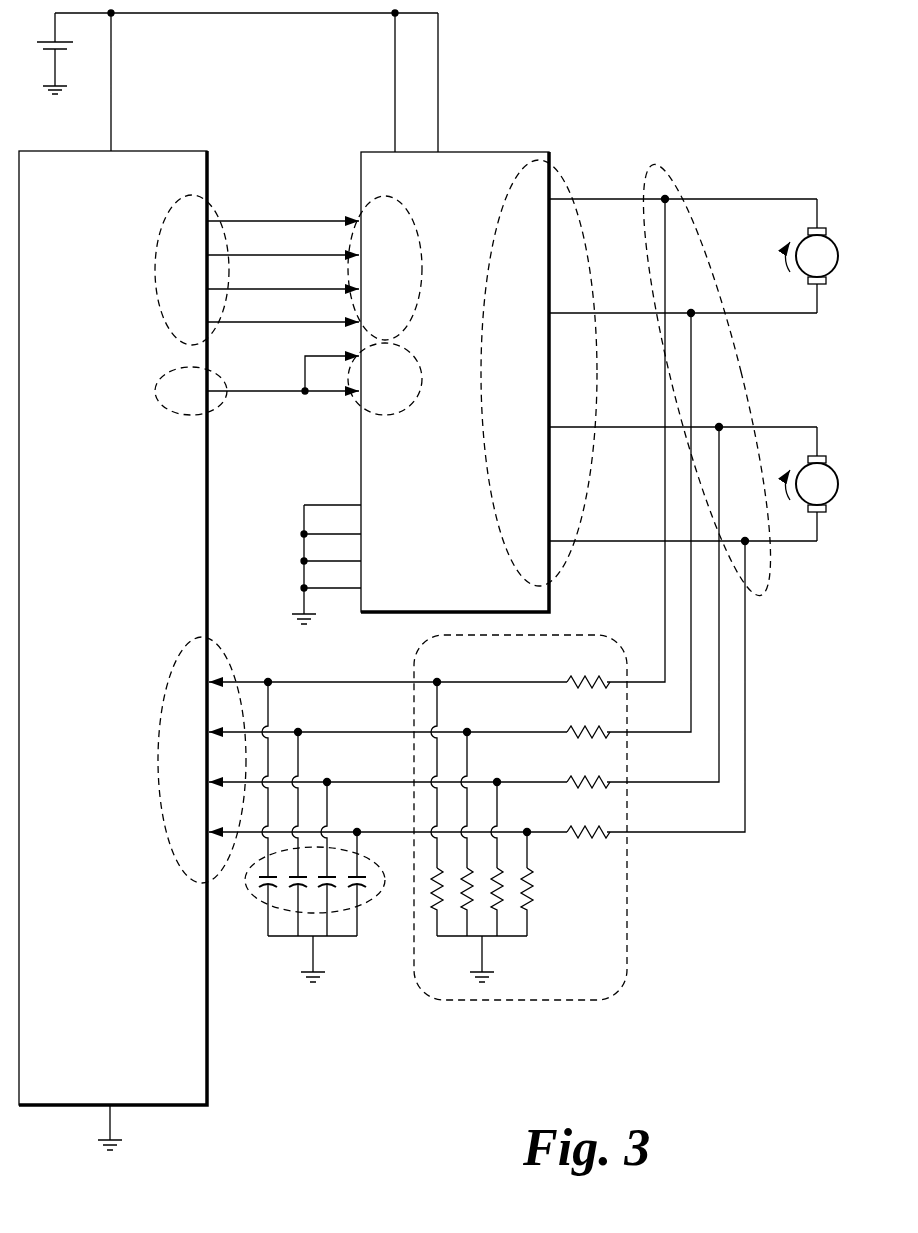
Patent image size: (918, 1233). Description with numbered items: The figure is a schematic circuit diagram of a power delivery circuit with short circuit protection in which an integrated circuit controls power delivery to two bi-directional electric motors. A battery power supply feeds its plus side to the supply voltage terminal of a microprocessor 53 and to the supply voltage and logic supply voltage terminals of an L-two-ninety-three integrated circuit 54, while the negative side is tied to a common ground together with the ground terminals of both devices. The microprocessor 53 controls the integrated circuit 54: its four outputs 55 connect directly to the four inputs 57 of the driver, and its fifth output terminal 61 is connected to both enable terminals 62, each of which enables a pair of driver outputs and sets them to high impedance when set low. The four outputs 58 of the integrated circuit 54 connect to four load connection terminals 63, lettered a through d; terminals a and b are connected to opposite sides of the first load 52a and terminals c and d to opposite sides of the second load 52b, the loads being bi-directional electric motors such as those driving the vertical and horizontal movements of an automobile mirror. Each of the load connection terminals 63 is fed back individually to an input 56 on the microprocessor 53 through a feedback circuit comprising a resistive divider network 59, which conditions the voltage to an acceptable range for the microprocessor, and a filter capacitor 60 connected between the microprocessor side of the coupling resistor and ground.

The first load 52a is at (838, 257).
The second load 52b is at (838, 484).
The microprocessor 53 is at (207, 1093).
The L293 integrated circuit 54 is at (480, 152).
The four outputs 55 is at (157, 285).
The inputs 56 is at (205, 883).
The four inputs 57 is at (352, 190).
The four outputs 58 is at (570, 182).
The resistive divider network 59 is at (627, 905).
The filter capacitor 60 is at (368, 905).
The fifth output terminal 61 is at (185, 418).
The enable terminals 62 is at (385, 420).
The load connection terminals 63 is at (690, 170).